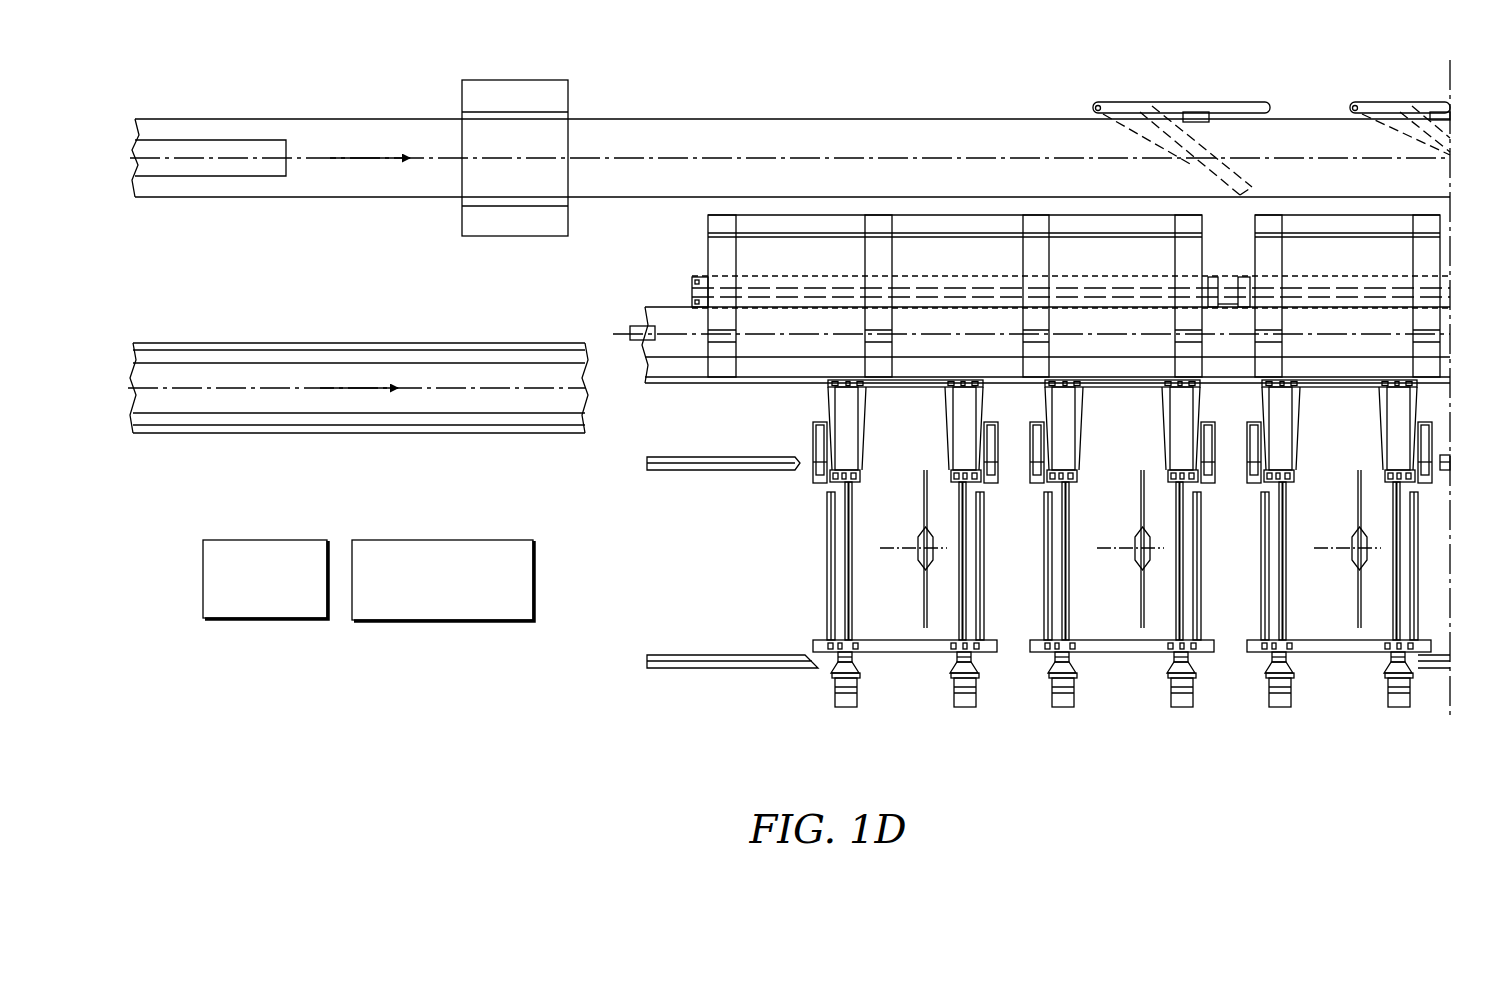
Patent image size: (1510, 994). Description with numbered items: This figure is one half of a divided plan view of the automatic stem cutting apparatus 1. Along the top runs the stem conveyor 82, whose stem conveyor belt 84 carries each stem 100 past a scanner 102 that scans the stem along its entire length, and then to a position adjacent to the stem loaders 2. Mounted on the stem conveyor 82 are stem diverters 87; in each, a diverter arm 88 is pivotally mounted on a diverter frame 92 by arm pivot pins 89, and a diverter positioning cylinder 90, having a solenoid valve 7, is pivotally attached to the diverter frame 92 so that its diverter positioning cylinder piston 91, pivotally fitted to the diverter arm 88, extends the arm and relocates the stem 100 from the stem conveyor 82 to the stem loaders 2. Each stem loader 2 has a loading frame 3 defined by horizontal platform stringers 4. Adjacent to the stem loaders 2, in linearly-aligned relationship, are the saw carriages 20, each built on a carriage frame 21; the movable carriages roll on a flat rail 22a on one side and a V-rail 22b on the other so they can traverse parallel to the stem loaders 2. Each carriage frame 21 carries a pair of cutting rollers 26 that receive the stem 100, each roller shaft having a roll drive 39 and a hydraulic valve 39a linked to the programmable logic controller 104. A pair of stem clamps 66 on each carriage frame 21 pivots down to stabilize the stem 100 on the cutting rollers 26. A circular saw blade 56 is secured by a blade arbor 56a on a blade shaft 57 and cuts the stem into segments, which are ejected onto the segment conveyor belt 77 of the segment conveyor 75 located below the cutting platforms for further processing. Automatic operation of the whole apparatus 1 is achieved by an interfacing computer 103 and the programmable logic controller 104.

The stem cutting apparatus 1 is at (637, 486).
The stem loader 2 is at (1039, 271).
The loading frame 3 is at (838, 214).
The horizontal platform stringer 4 is at (1023, 256).
The solenoid valve 7 is at (1196, 118).
The saw carriage 20 is at (1136, 562).
The carriage frame 21 is at (878, 654).
The flat rail 22a is at (745, 475).
The V-rail 22b is at (740, 653).
The cutting roller 26 is at (946, 392).
The roll drive 39 is at (981, 690).
The hydraulic valve 39a is at (860, 697).
The circular saw blade 56 is at (922, 592).
The blade arbor 56a is at (919, 535).
The blade shaft 57 is at (897, 549).
The stem clamp 66 is at (815, 486).
The segment conveyor 75 is at (366, 342).
The segment conveyor belt 77 is at (450, 398).
The stem conveyor 82 is at (618, 113).
The stem conveyor belt 84 is at (731, 133).
The stem diverter 87 is at (1273, 117).
The diverter arm 88 is at (1160, 101).
The arm pivot pin 89 is at (1096, 105).
The diverter positioning cylinder 90 is at (1204, 150).
The diverter positioning cylinder piston 91 is at (1160, 122).
The diverter frame 92 is at (1245, 100).
The stem 100 is at (226, 142).
The scanner 102 is at (461, 98).
The computer 103 is at (297, 518).
The programmable logic controller 104 is at (452, 518).